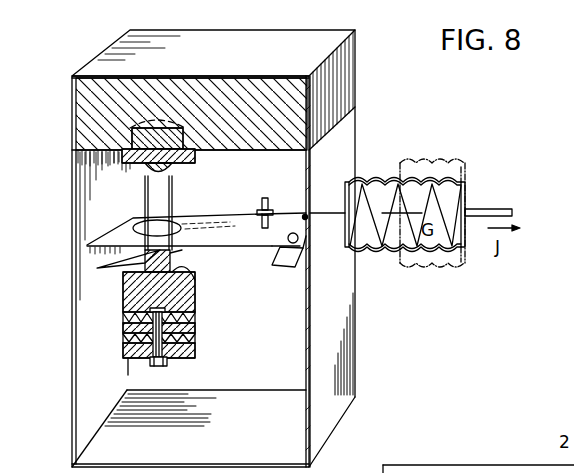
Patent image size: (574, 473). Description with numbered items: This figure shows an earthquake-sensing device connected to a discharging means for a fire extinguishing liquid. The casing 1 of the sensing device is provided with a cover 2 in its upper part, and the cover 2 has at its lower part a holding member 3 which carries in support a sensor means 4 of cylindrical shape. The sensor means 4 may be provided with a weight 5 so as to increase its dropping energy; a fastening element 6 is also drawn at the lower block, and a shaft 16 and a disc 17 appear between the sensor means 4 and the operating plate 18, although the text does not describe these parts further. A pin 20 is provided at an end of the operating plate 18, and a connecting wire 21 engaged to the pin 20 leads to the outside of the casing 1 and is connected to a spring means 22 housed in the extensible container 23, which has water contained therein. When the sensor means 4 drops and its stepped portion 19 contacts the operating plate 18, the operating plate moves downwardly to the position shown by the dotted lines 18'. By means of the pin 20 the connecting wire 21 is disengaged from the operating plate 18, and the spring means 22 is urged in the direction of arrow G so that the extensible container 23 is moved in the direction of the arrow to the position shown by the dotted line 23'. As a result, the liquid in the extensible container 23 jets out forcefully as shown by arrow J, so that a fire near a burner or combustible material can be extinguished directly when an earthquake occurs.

The casing 1 is at (70, 367).
The cover 2 is at (82, 98).
The holding member 3 is at (180, 125).
The sensor means 4 is at (194, 163).
The weight 5 is at (197, 352).
The bolt 6 is at (160, 368).
The shaft 16 is at (172, 198).
The disc 17 is at (127, 228).
The operating plate 18 is at (262, 251).
The operating plate in moved-down position 18' is at (129, 275).
The stepped portion 19 is at (128, 170).
The pin 20 is at (263, 202).
The connecting wire 21 is at (327, 218).
The spring means 22 is at (390, 248).
The extensible container 23 is at (405, 197).
The extensible container in moved position 23' is at (456, 211).